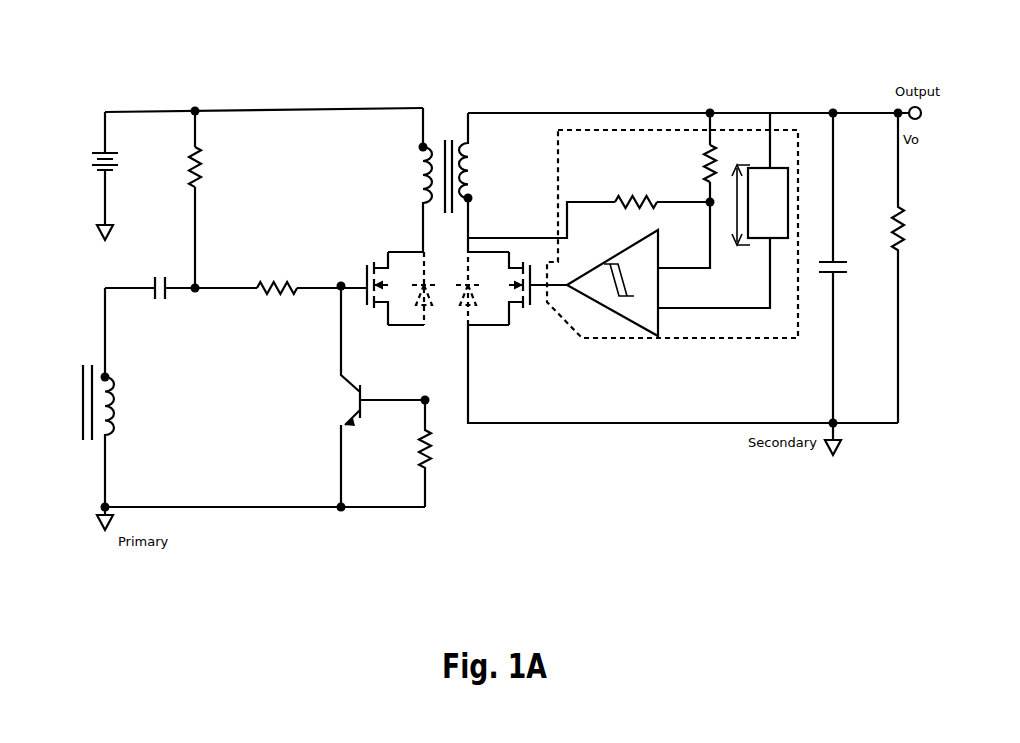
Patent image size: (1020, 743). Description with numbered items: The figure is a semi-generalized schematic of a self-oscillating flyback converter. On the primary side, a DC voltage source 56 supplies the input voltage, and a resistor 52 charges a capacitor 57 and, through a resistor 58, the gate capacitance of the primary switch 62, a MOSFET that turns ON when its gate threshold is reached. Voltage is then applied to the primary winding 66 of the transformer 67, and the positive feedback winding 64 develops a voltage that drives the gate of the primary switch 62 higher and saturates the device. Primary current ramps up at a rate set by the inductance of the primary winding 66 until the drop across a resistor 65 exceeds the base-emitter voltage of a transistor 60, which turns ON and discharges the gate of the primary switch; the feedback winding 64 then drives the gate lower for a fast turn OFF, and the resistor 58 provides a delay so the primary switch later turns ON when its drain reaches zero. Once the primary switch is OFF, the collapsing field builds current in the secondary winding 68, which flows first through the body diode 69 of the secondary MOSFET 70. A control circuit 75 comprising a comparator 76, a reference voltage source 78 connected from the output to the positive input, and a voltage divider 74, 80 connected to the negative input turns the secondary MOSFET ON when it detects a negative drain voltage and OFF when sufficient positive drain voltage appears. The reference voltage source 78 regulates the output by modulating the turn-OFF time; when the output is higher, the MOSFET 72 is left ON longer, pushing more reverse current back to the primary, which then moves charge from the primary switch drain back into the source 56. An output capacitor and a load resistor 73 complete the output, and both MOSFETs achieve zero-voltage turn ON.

The resistor 52 is at (203, 165).
The DC voltage source 56 is at (92, 172).
The capacitor 57 is at (172, 299).
The resistor 58 is at (275, 300).
The transistor 60 is at (340, 402).
The primary switch 62 is at (368, 256).
The positive feedback winding 64 is at (120, 438).
The resistor 65 is at (437, 462).
The primary winding 66 is at (413, 177).
The transformer 67 is at (448, 134).
The secondary winding 68 is at (478, 157).
The body diode 69 is at (464, 307).
The MOSFET M2 70 is at (533, 326).
The MOSFET 72 is at (850, 278).
The load resistor 73 is at (909, 248).
The voltage divider resistor 74 is at (704, 150).
The control circuit 75 is at (655, 341).
The comparator 76 is at (664, 304).
The reference voltage source 78 is at (775, 160).
The voltage divider resistor 80 is at (641, 190).